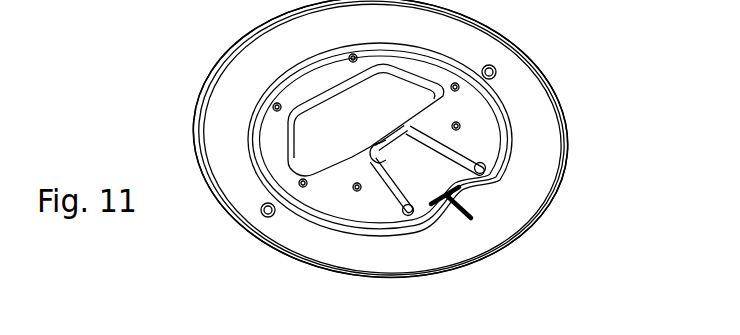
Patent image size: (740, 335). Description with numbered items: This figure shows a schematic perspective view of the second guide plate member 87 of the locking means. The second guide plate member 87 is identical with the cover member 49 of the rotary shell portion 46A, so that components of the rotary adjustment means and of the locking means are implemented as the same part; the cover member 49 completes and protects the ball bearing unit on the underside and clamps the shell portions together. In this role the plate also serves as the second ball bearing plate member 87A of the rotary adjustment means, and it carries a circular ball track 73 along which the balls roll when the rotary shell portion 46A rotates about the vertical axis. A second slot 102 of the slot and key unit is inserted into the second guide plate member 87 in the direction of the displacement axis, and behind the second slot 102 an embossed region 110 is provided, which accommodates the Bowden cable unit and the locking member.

The rotary shell portion 46A is at (213, 247).
The cover member 49 is at (277, 252).
The circular ball track 73 is at (530, 85).
The second guide plate member 87 is at (557, 178).
The second ball bearing plate member 87A is at (193, 111).
The second slot 102 is at (458, 216).
The embossed region 110 is at (476, 193).